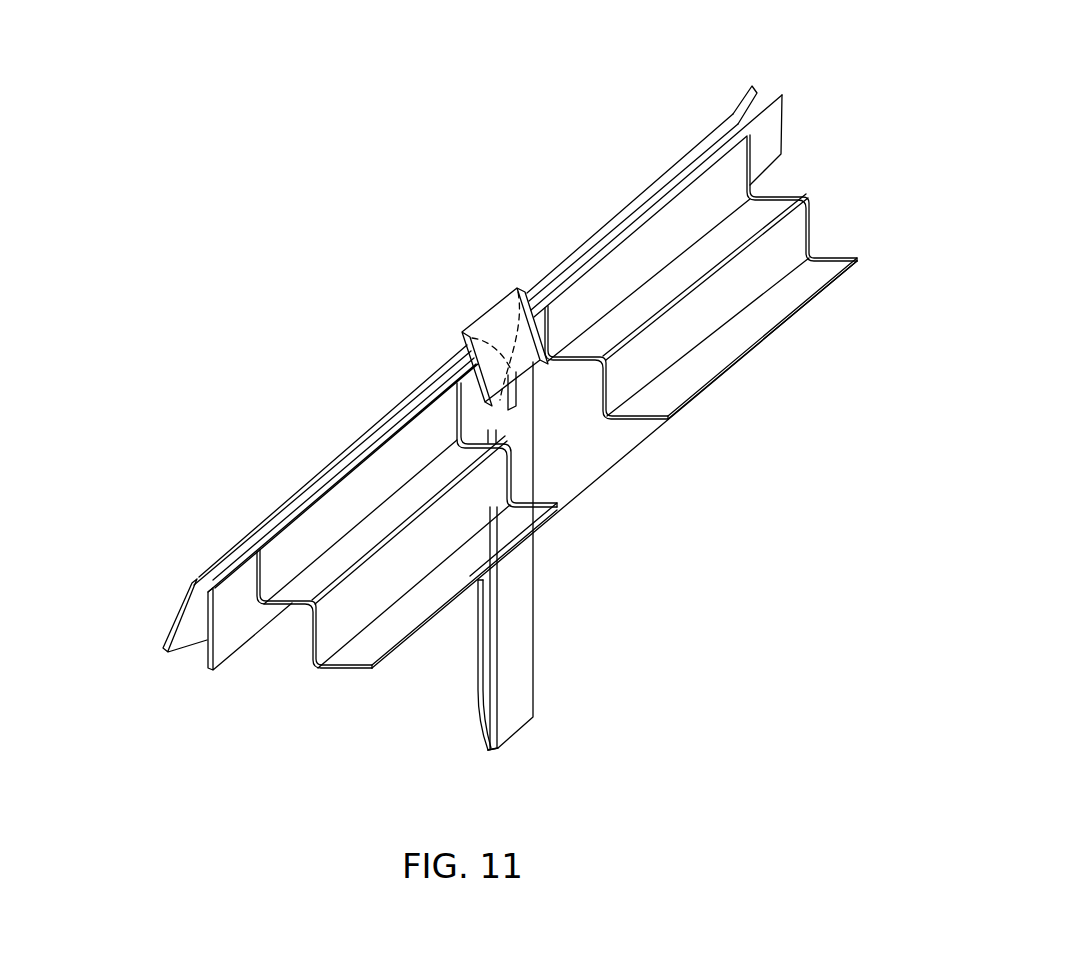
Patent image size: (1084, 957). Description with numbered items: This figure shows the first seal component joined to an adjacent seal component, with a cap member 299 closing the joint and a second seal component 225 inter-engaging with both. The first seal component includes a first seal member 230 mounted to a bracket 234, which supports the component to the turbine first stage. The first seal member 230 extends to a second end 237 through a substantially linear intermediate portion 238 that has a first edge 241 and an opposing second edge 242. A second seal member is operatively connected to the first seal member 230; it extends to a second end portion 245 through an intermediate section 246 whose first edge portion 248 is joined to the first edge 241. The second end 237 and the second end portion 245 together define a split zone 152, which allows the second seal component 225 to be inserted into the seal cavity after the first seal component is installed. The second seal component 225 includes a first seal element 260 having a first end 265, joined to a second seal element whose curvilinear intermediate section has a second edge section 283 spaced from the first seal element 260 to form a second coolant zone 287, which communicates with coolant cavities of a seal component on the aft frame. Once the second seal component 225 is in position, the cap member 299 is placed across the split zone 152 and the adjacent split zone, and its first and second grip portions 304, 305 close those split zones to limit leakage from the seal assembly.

The split zone 152 is at (778, 80).
The second seal component 225 is at (552, 590).
The first seal member 230 is at (568, 386).
The bracket 234 is at (735, 312).
The second end 237 is at (788, 127).
The intermediate portion 238 is at (543, 370).
The first edge 241 is at (692, 172).
The second edge 242 is at (545, 378).
The second end portion 245 is at (755, 83).
The intermediate section 246 is at (523, 290).
The first edge portion 248 is at (610, 225).
The first seal element 260 is at (477, 643).
The first end 265 is at (518, 742).
The second edge section 283 is at (477, 687).
The second coolant zone 287 is at (475, 600).
The cap member 299 is at (485, 521).
The first grip portion 304 is at (475, 376).
The second grip portion 305 is at (460, 353).